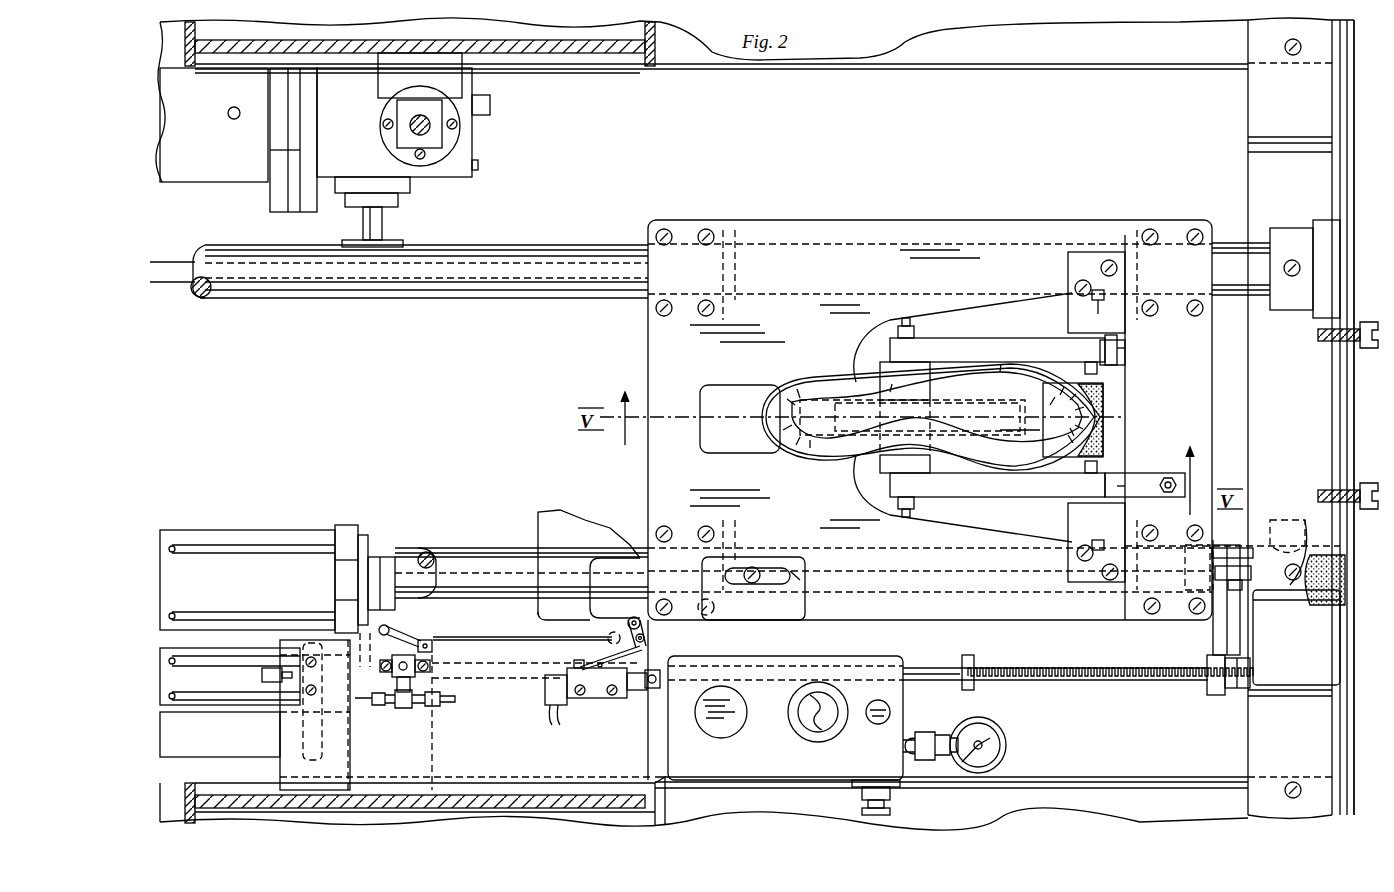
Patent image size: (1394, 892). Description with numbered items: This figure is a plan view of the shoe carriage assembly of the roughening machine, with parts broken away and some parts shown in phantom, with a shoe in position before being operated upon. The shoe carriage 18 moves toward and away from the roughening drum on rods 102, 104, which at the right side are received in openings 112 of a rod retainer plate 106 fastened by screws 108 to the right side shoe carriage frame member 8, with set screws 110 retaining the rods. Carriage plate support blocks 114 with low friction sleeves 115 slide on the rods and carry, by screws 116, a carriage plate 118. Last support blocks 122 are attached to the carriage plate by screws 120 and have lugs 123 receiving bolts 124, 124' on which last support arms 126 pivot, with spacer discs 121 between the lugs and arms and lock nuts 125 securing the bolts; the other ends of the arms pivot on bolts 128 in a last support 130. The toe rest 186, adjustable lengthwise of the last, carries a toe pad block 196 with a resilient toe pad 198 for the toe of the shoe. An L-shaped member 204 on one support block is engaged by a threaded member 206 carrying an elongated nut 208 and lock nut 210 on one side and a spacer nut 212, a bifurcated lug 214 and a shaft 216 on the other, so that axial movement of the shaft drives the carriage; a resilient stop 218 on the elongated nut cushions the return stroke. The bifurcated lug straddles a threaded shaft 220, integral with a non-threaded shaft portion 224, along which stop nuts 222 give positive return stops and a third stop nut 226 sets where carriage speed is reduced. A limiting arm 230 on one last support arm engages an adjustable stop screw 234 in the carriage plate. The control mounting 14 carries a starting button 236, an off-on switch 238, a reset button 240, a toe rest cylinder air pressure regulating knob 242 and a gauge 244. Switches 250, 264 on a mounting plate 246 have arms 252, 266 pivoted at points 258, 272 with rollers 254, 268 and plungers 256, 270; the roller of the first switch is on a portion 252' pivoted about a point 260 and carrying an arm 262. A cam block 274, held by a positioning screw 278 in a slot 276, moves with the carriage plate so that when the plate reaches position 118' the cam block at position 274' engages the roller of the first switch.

The right side shoe carriage frame member 8 is at (1353, 180).
The control mounting 14 is at (858, 658).
The shoe carriage 18 is at (1044, 200).
The rod 102 is at (497, 562).
The rod 104 is at (512, 256).
The rod retainer plate 106 is at (1322, 388).
The screw 108 is at (1362, 332).
The set screw 110 is at (1292, 260).
The opening 112 is at (1300, 300).
The carriage plate support block 114 is at (723, 292).
The low friction sleeve 115 is at (736, 246).
The screw 116 is at (702, 232).
The carriage plate 118 is at (906, 420).
The carriage plate position 118' is at (568, 560).
The screw 120 is at (1102, 266).
The spacer disc 121 is at (1128, 350).
The last support block 122 is at (1076, 284).
The lug 123 is at (1068, 322).
The bolt 124 is at (1148, 363).
The bolt 124' is at (1121, 485).
The lock nut 125 is at (1098, 302).
The last support arm 126 is at (998, 348).
The bolt 128 is at (906, 322).
The last support 130 is at (883, 370).
The toe rest 186 is at (1098, 430).
The toe pad block 196 is at (1104, 392).
The toe pad 198 is at (1100, 410).
The L-shaped member 204 is at (1234, 526).
The threaded member 206 is at (1294, 598).
The elongated nut 208 is at (1296, 618).
The lock nut 210 is at (1252, 594).
The spacer nut 212 is at (1206, 612).
The bifurcated lug 214 is at (1210, 682).
The shaft 216 is at (411, 578).
The stop 218 is at (1338, 606).
The threaded shaft 220 is at (1122, 678).
The stop nut 222 is at (1238, 690).
The non-threaded shaft portion 224 is at (938, 666).
The stop nut 226 is at (972, 662).
The limiting arm 230 is at (1150, 478).
The stop screw 234 is at (1156, 505).
The starting button 236 is at (736, 722).
The off-on switch 238 is at (812, 732).
The reset button 240 is at (890, 708).
The toe rest cylinder air pressure regulating knob 242 is at (890, 794).
The toe rest cylinder air pressure gauge 244 is at (1008, 745).
The mounting plate 246 is at (528, 642).
The switch 250 is at (604, 700).
The arm 252 is at (597, 654).
The portion of arm 252' is at (622, 621).
The roller 254 is at (610, 636).
The plunger 256 is at (600, 668).
The pivot point 258 is at (574, 664).
The pivot point 260 is at (648, 648).
The arm 262 is at (680, 630).
The switch 264 is at (436, 656).
The arm 266 is at (406, 634).
The roller 268 is at (380, 626).
The plunger 270 is at (366, 640).
The pivot point 272 is at (428, 640).
The cam block 274 is at (793, 582).
The cam block position 274' is at (566, 588).
The slot 276 is at (808, 580).
The positioning screw 278 is at (755, 585).